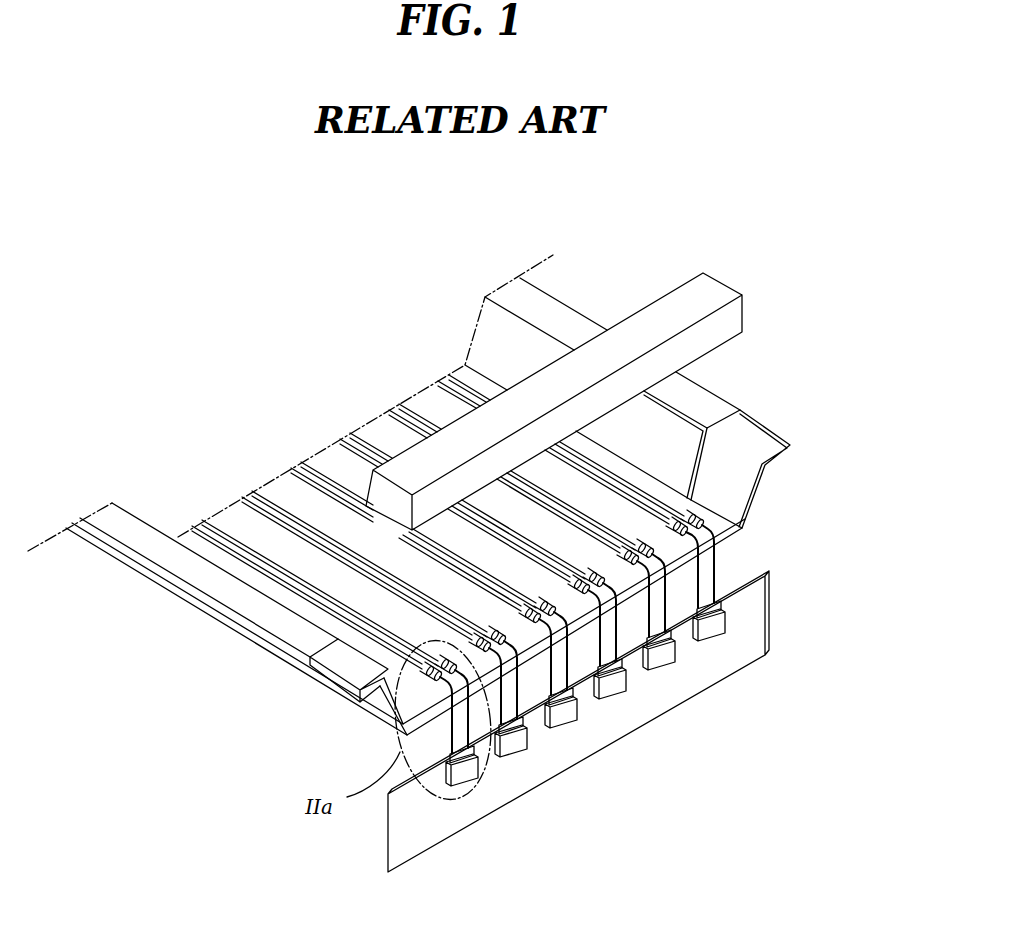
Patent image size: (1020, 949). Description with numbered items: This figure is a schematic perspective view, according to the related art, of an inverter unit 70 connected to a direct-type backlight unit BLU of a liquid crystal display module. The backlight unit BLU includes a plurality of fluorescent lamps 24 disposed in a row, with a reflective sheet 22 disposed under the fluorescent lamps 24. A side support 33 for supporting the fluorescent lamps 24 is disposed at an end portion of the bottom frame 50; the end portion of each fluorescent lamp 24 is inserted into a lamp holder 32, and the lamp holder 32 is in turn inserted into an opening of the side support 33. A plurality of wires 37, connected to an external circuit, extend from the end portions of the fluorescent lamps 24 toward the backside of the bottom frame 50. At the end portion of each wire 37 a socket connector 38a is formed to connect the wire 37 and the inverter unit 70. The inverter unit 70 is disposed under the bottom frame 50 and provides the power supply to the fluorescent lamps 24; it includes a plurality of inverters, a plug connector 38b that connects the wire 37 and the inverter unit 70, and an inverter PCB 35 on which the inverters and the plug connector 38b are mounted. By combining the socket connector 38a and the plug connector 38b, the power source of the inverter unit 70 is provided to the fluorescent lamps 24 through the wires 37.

The reflective sheet 22 is at (114, 508).
The fluorescent lamps 24 is at (226, 536).
The lamp holder 32 is at (368, 716).
The side support 33 is at (712, 292).
The inverter PCB 35 is at (722, 672).
The wires 37 is at (728, 561).
The socket connector 38a is at (733, 600).
The plug connector 38b is at (715, 626).
The bottom frame 50 is at (340, 668).
The inverter unit 70 is at (852, 556).
The backlight unit BLU is at (327, 378).